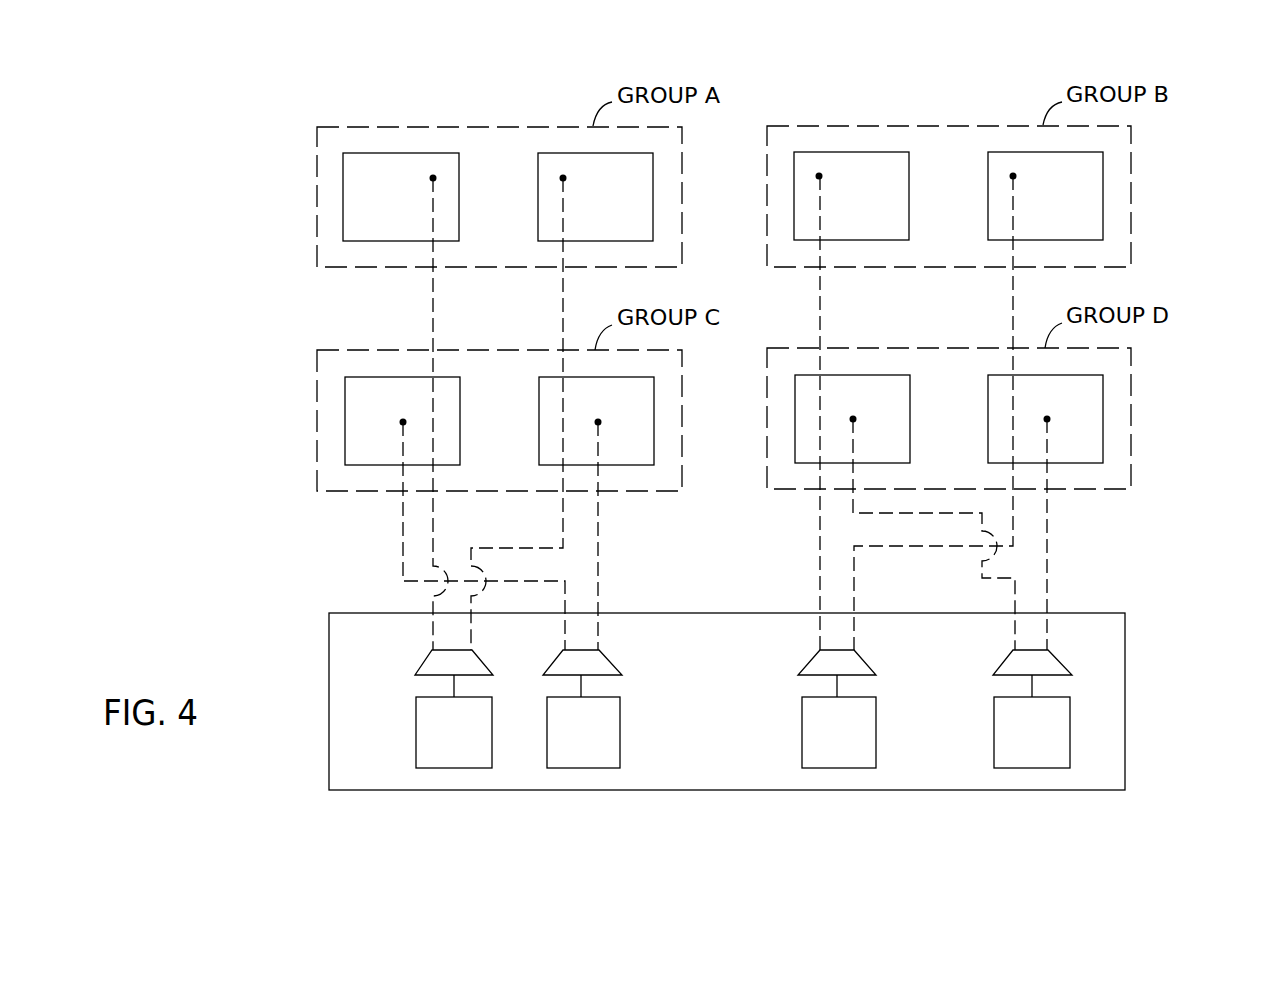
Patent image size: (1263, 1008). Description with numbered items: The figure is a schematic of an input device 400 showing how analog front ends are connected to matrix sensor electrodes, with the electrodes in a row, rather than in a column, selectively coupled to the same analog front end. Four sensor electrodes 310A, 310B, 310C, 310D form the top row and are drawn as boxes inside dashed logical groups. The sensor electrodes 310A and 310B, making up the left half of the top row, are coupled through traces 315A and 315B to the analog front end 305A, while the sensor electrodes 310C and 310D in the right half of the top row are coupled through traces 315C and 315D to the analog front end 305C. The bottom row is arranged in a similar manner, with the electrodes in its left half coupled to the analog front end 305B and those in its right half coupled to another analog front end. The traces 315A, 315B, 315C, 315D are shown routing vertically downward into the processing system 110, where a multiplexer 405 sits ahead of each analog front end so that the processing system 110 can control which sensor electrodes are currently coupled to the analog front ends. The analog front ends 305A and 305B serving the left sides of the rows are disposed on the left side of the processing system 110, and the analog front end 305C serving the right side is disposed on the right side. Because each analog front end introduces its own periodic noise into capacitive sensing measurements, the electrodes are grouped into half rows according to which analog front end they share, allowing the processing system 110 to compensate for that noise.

The input device 400 is at (153, 144).
The processing system 110 is at (1125, 655).
The sensor electrode 310A is at (373, 153).
The sensor electrode 310B is at (562, 153).
The sensor electrode 310C is at (867, 152).
The sensor electrode 310D is at (1006, 152).
The trace 315A is at (433, 519).
The trace 315B is at (563, 521).
The trace 315C is at (820, 524).
The trace 315D is at (1015, 518).
The multiplexer 405 is at (420, 663).
The analog front end 305A is at (428, 759).
The analog front end 305B is at (557, 759).
The analog front end 305C is at (813, 759).